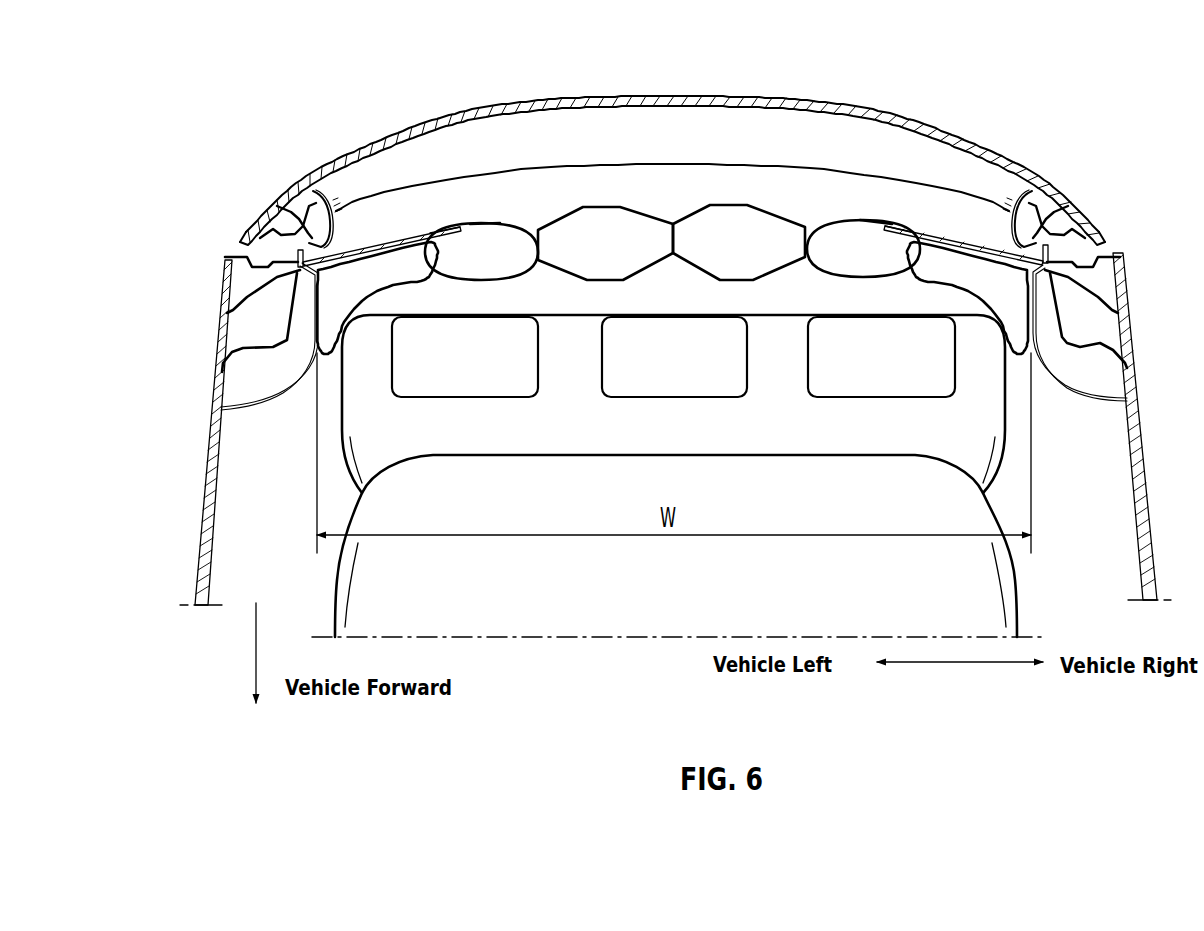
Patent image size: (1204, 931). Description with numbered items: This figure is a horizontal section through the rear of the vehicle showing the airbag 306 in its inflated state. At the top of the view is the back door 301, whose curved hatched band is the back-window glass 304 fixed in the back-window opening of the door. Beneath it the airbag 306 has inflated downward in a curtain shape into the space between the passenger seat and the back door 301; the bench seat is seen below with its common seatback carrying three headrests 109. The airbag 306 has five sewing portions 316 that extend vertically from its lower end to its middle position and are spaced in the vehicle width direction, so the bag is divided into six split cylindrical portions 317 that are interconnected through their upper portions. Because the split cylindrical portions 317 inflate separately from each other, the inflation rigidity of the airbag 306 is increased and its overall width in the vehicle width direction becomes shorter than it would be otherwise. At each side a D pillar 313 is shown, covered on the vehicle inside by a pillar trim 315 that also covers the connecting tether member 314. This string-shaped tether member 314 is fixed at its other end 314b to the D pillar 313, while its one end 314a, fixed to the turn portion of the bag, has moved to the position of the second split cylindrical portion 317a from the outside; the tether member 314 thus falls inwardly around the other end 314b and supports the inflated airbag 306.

The headrest 109 is at (472, 384).
The back door 301 is at (978, 141).
The back-window glass 304 is at (770, 98).
The airbag 306 is at (672, 187).
The D pillar 313 is at (243, 254).
The connecting tether member 314 is at (392, 236).
The one end of connecting tether member 314a is at (447, 230).
The other end of connecting tether member 314b is at (292, 206).
The pillar trim 315 is at (252, 405).
The sewing portion 316 is at (538, 237).
The split cylindrical portion 317 is at (595, 206).
The second split cylindrical portion from the outside 317a is at (491, 222).